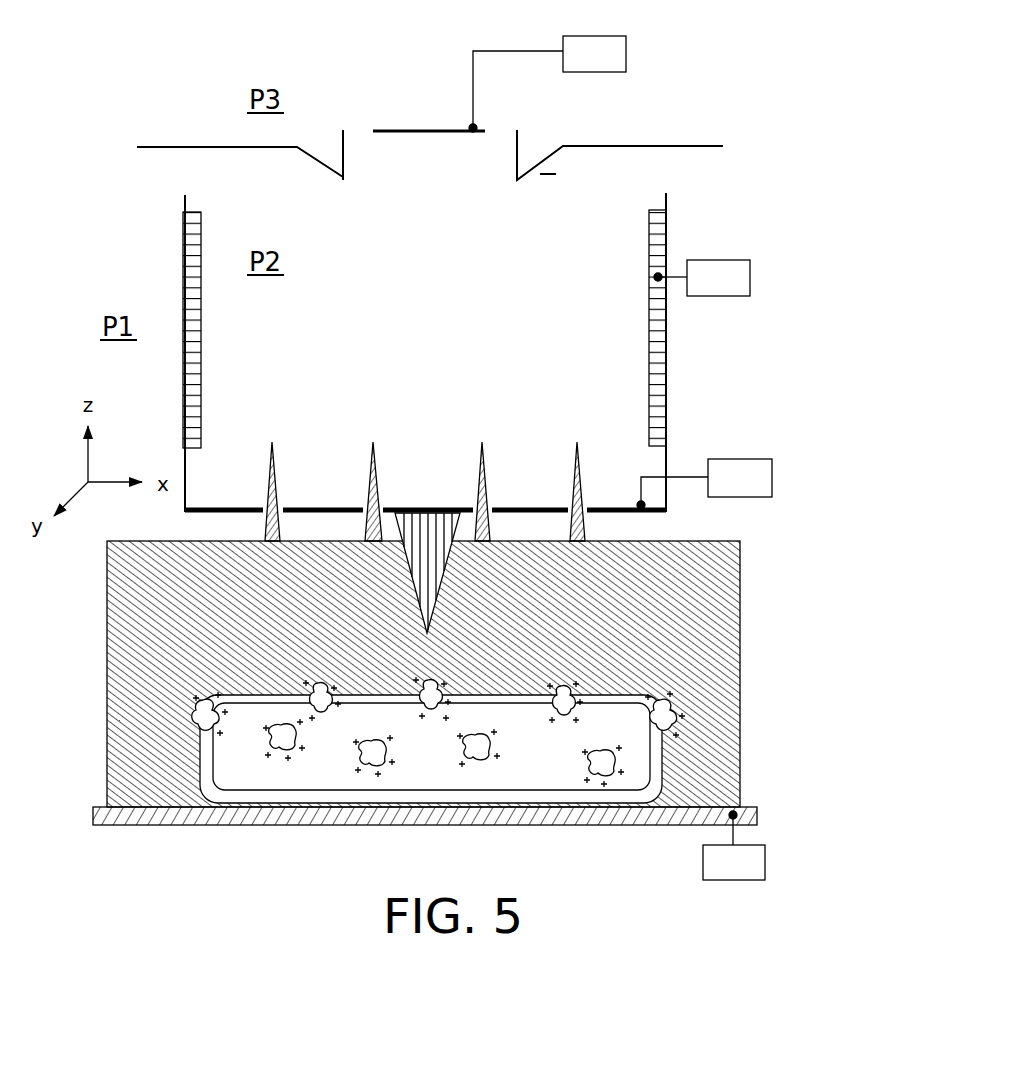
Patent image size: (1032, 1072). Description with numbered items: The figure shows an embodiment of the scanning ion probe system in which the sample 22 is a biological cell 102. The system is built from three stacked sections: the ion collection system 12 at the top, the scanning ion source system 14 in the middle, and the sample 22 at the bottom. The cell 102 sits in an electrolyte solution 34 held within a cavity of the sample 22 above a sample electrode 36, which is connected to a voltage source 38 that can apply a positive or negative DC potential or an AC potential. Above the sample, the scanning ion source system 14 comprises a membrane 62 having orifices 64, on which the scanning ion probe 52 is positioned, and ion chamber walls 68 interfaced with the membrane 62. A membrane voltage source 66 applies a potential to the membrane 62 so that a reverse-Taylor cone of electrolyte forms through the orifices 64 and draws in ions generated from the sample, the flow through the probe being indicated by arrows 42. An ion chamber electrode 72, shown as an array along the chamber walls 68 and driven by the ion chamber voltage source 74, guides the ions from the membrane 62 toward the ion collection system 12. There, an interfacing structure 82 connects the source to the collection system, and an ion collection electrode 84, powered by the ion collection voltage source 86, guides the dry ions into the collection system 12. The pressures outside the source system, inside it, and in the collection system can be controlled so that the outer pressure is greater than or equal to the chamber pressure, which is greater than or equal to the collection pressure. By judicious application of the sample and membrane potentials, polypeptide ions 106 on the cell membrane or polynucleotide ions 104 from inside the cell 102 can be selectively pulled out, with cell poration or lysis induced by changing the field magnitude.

The ion collection system 12 is at (485, 91).
The scanning ion source system 14 is at (528, 352).
The sample 22 is at (778, 683).
The electrolyte solution 34 is at (702, 778).
The sample electrode 36 is at (487, 826).
The voltage source 38 is at (778, 855).
The aperture outlet flow 42 is at (451, 475).
The scanning ion probe 52 is at (434, 612).
The membrane 62 is at (518, 507).
The orifices 64 is at (286, 482).
The membrane voltage source 66 is at (792, 475).
The ion chamber walls 68 is at (668, 467).
The ion chamber electrode 72 is at (647, 386).
The ion chamber voltage source 74 is at (770, 270).
The interfacing structure 82 is at (642, 145).
The ion collection electrode 84 is at (432, 129).
The ion collection voltage source 86 is at (643, 55).
The cell 102 is at (315, 790).
The polynucleotide ions 104 is at (378, 785).
The polypeptide ions 106 is at (558, 745).